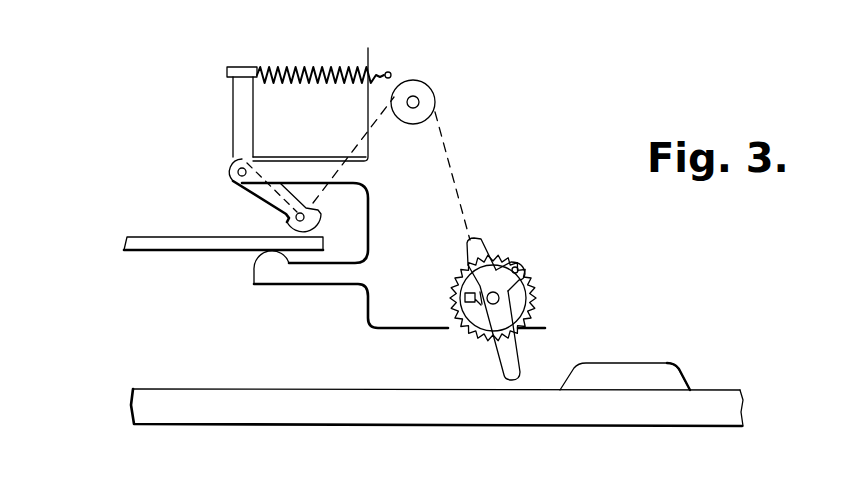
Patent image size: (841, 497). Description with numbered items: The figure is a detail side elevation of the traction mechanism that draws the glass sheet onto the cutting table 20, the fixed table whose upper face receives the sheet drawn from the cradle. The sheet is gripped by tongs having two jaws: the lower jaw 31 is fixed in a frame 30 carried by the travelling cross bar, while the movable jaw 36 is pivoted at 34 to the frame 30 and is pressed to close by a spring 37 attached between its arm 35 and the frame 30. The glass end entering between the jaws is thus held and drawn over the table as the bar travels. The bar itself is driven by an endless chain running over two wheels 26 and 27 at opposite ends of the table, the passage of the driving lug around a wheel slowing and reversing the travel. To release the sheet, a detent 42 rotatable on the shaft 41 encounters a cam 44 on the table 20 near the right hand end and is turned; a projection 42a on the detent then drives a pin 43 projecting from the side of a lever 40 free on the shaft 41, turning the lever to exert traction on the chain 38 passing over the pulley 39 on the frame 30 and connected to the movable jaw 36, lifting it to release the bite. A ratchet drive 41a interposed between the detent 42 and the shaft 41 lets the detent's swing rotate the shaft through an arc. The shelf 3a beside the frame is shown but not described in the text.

The cutting table 20 is at (288, 395).
The wheel 26 is at (753, 12).
The wheel 27 is at (189, 4).
The frame 30 is at (368, 48).
The lower jaw 31 is at (279, 284).
The pivot 34 is at (232, 173).
The arm 35 is at (242, 100).
The movable jaw 36 is at (281, 223).
The spring 37 is at (308, 68).
The chain 38 is at (463, 177).
The pulley 39 is at (421, 95).
The lever 40 is at (486, 245).
The shaft 41 is at (500, 297).
The ratchet drive 41a is at (530, 268).
The detent 42 is at (519, 366).
The projection 42a is at (475, 308).
The pin 43 is at (465, 296).
The cam 44 is at (634, 364).
The shelf 3a is at (150, 249).